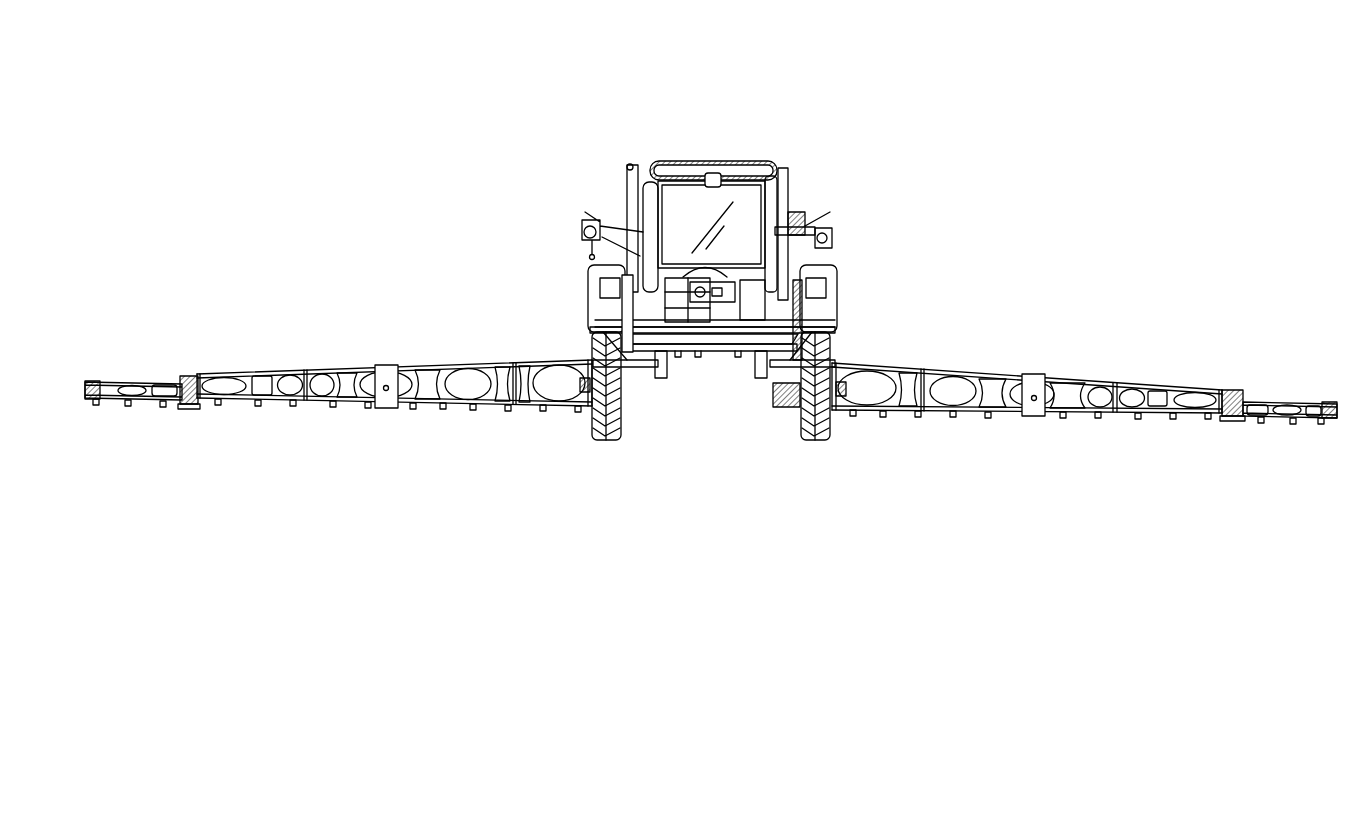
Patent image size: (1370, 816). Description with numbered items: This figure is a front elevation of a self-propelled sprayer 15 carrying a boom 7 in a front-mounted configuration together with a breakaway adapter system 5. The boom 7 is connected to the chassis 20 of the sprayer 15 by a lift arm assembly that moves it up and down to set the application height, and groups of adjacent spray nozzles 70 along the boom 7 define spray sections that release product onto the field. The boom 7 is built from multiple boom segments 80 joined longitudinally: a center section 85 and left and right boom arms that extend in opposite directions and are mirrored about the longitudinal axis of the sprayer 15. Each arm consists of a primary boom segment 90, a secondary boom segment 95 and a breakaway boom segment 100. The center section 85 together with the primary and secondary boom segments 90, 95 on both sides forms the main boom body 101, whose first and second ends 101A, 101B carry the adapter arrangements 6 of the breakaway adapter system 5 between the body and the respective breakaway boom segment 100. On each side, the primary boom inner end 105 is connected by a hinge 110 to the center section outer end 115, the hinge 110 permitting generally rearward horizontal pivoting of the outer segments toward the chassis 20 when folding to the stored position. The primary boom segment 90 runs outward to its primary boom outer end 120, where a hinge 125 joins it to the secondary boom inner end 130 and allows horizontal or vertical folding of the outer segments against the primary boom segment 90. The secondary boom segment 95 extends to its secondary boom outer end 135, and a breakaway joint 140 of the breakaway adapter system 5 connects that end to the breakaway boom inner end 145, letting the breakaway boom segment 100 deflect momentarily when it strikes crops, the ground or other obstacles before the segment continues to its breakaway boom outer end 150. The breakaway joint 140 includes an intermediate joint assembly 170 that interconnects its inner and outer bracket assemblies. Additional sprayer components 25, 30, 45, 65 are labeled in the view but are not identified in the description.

The breakaway adapter system 5 is at (205, 487).
The adapter arrangements 6 is at (203, 413).
The boom 7 is at (930, 465).
The self-propelled sprayer 15 is at (657, 46).
The chassis 20 is at (750, 352).
The cab 25 is at (728, 300).
The canopy light bar 30 is at (705, 160).
The wheels 45 is at (612, 443).
The boom bottom member 65 is at (865, 423).
The spray nozzles 70 is at (130, 406).
The boom segments 80 is at (152, 305).
The center section 85 is at (702, 368).
The primary boom segment 90 is at (562, 347).
The secondary boom segment 95 is at (247, 350).
The breakaway boom segment 100 is at (125, 318).
The main boom body 101 is at (558, 418).
The first end 101A is at (1155, 432).
The second end 101B is at (265, 443).
The primary boom inner end 105 is at (532, 410).
The hinge 110 is at (592, 407).
The center section outer end 115 is at (634, 382).
The primary boom outer end 120 is at (446, 366).
The hinge 125 is at (390, 402).
The secondary boom inner end 130 is at (357, 366).
The secondary boom outer end 135 is at (262, 372).
The breakaway joint 140 is at (182, 412).
The breakaway boom inner end 145 is at (205, 374).
The breakaway boom outer end 150 is at (107, 382).
The intermediate joint assembly 170 is at (1283, 420).